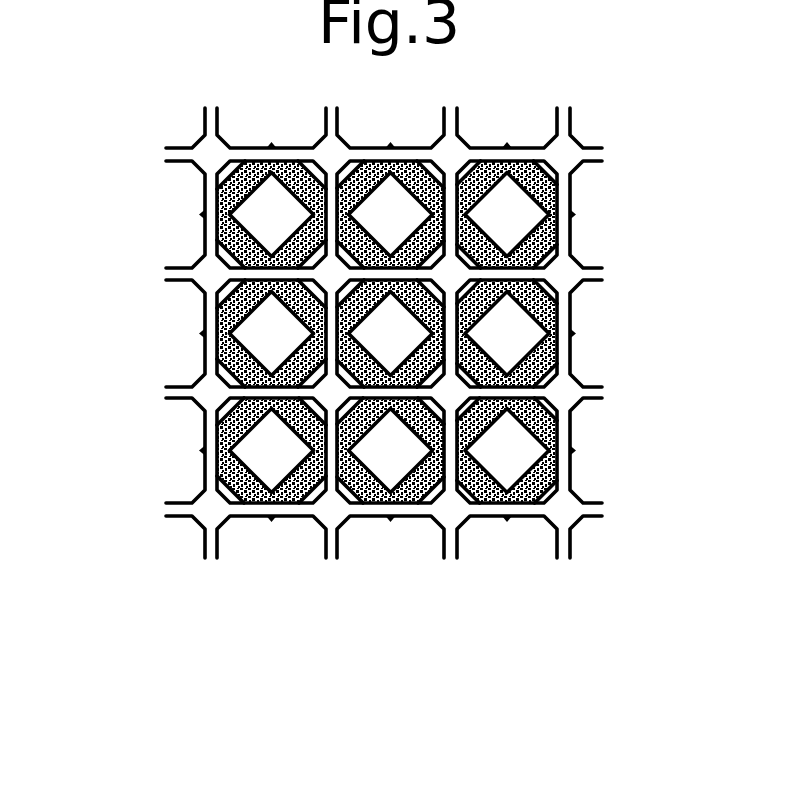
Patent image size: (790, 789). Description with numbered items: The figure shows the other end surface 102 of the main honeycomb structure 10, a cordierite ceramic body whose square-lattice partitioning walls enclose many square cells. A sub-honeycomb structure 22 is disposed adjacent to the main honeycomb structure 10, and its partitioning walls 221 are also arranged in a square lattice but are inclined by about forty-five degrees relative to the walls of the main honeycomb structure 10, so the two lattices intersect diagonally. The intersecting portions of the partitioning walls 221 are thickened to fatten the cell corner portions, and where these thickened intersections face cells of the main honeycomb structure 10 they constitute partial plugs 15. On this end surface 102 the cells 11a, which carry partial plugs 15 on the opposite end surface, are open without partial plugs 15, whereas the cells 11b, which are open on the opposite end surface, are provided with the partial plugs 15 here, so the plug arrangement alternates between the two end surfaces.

The main honeycomb structure 10 is at (560, 249).
The cells 11a is at (536, 203).
The cells 11b is at (468, 293).
The partial plugs 15 is at (208, 158).
The sub-honeycomb structure 22 is at (208, 122).
The partitioning walls 221 is at (247, 153).
The other end surface 102 is at (160, 462).